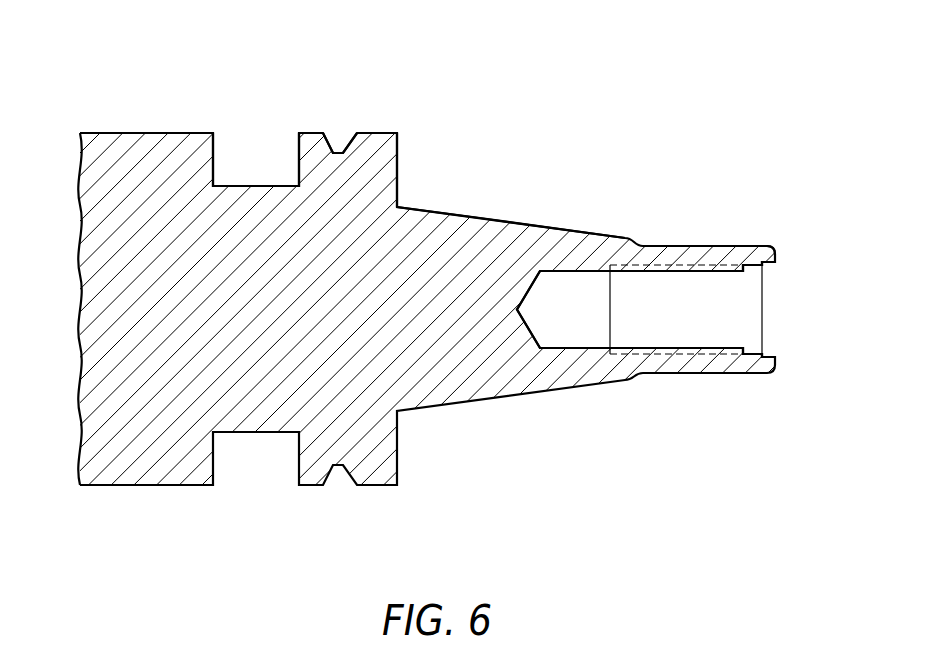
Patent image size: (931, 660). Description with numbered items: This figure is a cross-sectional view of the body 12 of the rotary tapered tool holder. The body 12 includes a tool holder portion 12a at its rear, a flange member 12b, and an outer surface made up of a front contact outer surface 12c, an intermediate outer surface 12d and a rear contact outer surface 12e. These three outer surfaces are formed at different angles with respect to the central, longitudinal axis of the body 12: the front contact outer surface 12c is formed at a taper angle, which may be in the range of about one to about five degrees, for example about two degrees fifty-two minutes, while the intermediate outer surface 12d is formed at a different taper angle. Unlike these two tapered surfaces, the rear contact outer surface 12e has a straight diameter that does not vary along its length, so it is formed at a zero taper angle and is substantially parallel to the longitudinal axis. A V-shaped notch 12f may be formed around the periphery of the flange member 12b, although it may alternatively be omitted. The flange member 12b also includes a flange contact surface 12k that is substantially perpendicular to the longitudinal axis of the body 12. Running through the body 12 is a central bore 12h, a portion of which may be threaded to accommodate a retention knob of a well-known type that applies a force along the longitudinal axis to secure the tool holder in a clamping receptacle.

The body 12 is at (611, 210).
The tool holder portion 12a is at (258, 186).
The flange member 12b is at (378, 133).
The front contact outer surface 12c is at (412, 207).
The intermediate outer surface 12d is at (515, 222).
The rear contact outer surface 12e is at (712, 245).
The V-shaped notch 12f is at (342, 152).
The central bore 12h is at (678, 315).
The flange contact surface 12k is at (400, 160).